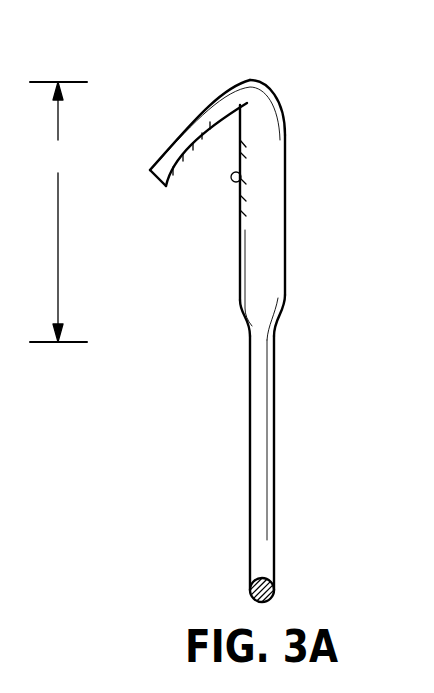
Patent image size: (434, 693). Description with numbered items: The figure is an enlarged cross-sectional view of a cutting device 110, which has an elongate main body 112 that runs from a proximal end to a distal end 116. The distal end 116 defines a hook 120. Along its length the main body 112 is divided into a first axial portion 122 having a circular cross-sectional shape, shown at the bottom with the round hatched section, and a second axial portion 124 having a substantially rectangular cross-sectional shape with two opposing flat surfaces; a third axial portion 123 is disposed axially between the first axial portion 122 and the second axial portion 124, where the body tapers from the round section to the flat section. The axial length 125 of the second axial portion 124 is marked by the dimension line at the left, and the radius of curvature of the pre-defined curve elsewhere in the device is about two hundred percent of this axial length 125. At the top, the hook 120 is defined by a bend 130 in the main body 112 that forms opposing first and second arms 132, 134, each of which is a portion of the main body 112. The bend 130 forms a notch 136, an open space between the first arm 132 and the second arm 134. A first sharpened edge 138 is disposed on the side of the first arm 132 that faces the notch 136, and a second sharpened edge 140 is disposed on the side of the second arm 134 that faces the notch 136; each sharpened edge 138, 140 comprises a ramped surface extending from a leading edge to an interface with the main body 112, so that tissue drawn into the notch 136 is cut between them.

The cutting device 110 is at (228, 307).
The main body 112 is at (274, 473).
The distal end 116 is at (285, 283).
The hook 120 is at (211, 154).
The first axial portion 122 is at (246, 469).
The third axial portion 123 is at (260, 316).
The second axial portion 124 is at (245, 222).
The axial length 125 is at (58, 212).
The bend 130 is at (247, 79).
The first arm 132 is at (285, 205).
The second arm 134 is at (183, 127).
The notch 136 is at (168, 245).
The first sharpened edge 138 is at (240, 171).
The second sharpened edge 140 is at (197, 147).